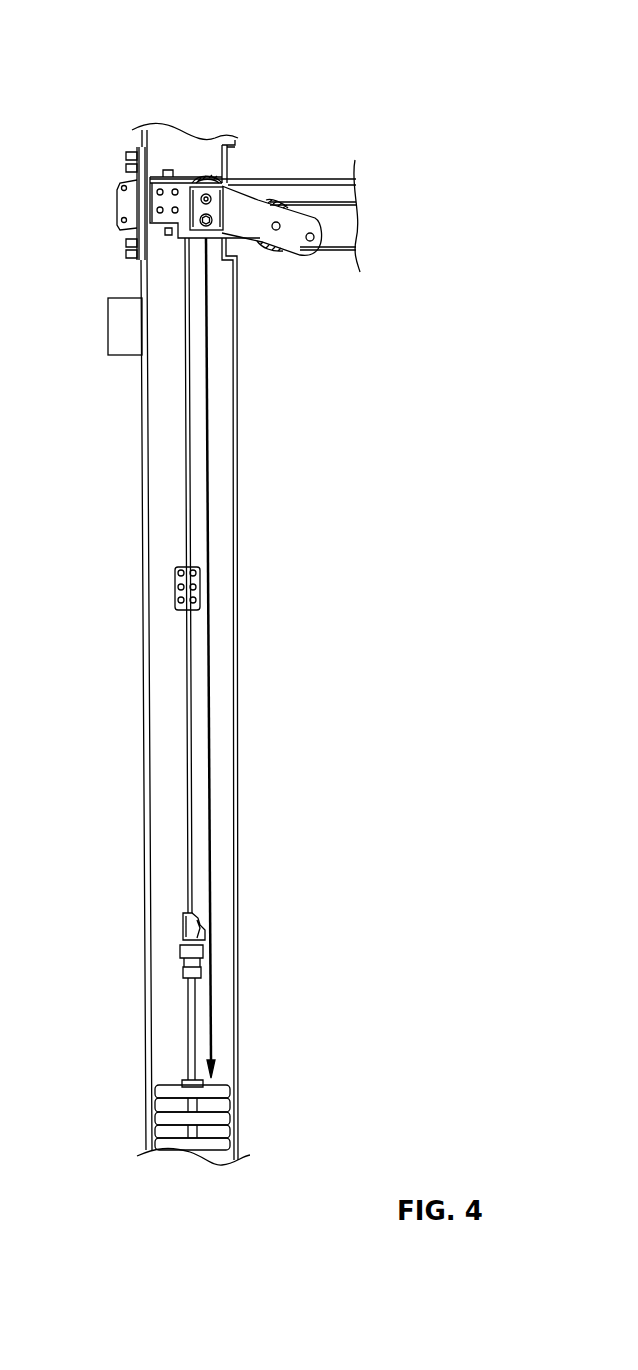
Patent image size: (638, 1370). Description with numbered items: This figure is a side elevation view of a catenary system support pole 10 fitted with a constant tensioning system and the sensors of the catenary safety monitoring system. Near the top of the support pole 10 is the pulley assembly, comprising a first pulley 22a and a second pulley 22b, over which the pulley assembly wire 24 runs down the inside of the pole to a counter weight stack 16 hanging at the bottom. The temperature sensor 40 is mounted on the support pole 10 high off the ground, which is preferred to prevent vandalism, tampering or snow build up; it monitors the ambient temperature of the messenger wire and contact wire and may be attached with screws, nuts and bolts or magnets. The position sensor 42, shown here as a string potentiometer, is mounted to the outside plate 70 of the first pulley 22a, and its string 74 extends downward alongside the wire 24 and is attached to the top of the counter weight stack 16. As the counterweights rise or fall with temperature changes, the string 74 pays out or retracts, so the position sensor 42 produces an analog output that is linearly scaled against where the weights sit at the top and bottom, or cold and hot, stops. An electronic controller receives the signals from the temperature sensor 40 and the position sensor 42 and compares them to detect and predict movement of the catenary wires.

The support pole 10 is at (143, 592).
The counter weight stack 16 is at (167, 1105).
The first pulley 22a is at (205, 182).
The second pulley 22b is at (273, 253).
The wire 24 is at (186, 790).
The temperature sensor 40 is at (118, 328).
The position sensor 42 is at (193, 183).
The outside plate 70 is at (162, 170).
The string 74 is at (210, 692).